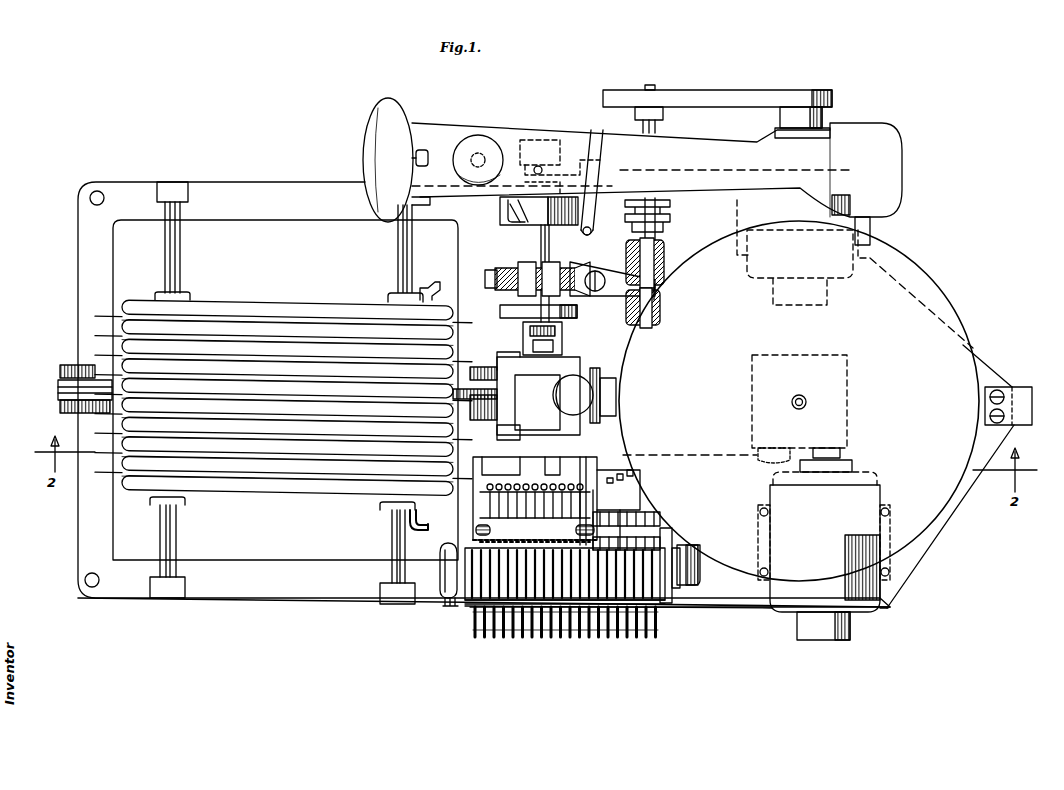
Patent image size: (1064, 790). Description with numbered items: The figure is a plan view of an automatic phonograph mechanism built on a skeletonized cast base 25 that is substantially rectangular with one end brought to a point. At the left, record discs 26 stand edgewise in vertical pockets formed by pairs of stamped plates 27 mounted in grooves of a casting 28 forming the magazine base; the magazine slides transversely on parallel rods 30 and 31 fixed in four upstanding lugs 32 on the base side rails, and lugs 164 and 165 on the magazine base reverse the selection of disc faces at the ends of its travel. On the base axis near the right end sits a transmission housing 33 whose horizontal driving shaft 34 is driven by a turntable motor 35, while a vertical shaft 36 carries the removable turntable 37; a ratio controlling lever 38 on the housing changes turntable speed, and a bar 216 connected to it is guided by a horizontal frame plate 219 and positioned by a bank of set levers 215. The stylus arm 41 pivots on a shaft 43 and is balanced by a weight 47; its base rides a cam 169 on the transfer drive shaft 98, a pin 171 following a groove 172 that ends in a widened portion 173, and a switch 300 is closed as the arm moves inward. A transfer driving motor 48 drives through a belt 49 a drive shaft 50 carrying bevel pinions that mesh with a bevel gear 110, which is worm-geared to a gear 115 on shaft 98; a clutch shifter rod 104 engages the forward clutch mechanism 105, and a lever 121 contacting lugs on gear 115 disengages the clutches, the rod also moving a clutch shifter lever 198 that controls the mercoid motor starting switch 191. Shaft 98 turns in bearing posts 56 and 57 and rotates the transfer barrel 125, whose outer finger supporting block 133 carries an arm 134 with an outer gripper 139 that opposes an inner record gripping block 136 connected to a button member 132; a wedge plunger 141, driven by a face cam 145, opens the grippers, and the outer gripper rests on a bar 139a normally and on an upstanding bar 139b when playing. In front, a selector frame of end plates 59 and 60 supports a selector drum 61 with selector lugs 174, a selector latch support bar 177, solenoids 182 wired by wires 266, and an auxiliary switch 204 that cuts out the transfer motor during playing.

The base 25 is at (723, 610).
The record discs 26 is at (251, 325).
The stamped plates 27 is at (326, 315).
The casting 28 is at (394, 302).
The rod 30 is at (392, 536).
The rod 31 is at (176, 532).
The upstanding lugs 32 is at (172, 600).
The housing 33 is at (848, 405).
The driving shaft 34 is at (175, 188).
The turntable motor 35 is at (878, 594).
The vertical shaft 36 is at (805, 397).
The turntable 37 is at (935, 292).
The ratio controlling lever 38 is at (752, 453).
The arm 41 is at (700, 139).
The shaft 43 is at (480, 150).
The weight 47 is at (375, 120).
The transfer driving motor 48 is at (870, 224).
The belt 49 is at (750, 90).
The drive shaft 50 is at (655, 128).
The transfer shaft bearing post 56 is at (500, 434).
The transfer shaft bearing post 57 is at (501, 357).
The end plate 59 is at (455, 545).
The end plate 60 is at (668, 540).
The selector drum 61 is at (634, 502).
The transfer drive shaft 98 is at (549, 244).
The clutch shifter rod 104 is at (666, 280).
The clutch mechanism 105 is at (670, 218).
The bevel gear 110 is at (640, 312).
The gear 115 is at (497, 272).
The lever 121 is at (605, 270).
The transfer barrel 125 is at (553, 374).
The button member 132 is at (578, 378).
The outer finger supporting block 133 is at (508, 380).
The arm 134 is at (62, 388).
The inner record gripping block 136 is at (498, 404).
The outer gripper 139 is at (90, 372).
The bar 139a is at (66, 406).
The upstanding bar 139b is at (1018, 392).
The wedge plunger 141 is at (560, 338).
The face cam 145 is at (577, 313).
The lug 164 is at (418, 530).
The lug 165 is at (430, 288).
The cam 169 is at (500, 214).
The pin 171 is at (542, 152).
The groove 172 is at (551, 195).
The widened portion 173 is at (521, 221).
The selector lugs 174 is at (624, 478).
The selector latch support bar 177 is at (648, 535).
The solenoid 182 is at (565, 600).
The mercoid motor starting switch 191 is at (690, 578).
The clutch shifter lever 198 is at (651, 292).
The auxiliary switch 204 is at (446, 590).
The set levers 215 is at (565, 485).
The bar 216 is at (688, 454).
The frame plate 219 is at (588, 488).
The wire 266 is at (624, 638).
The switch 300 is at (598, 192).